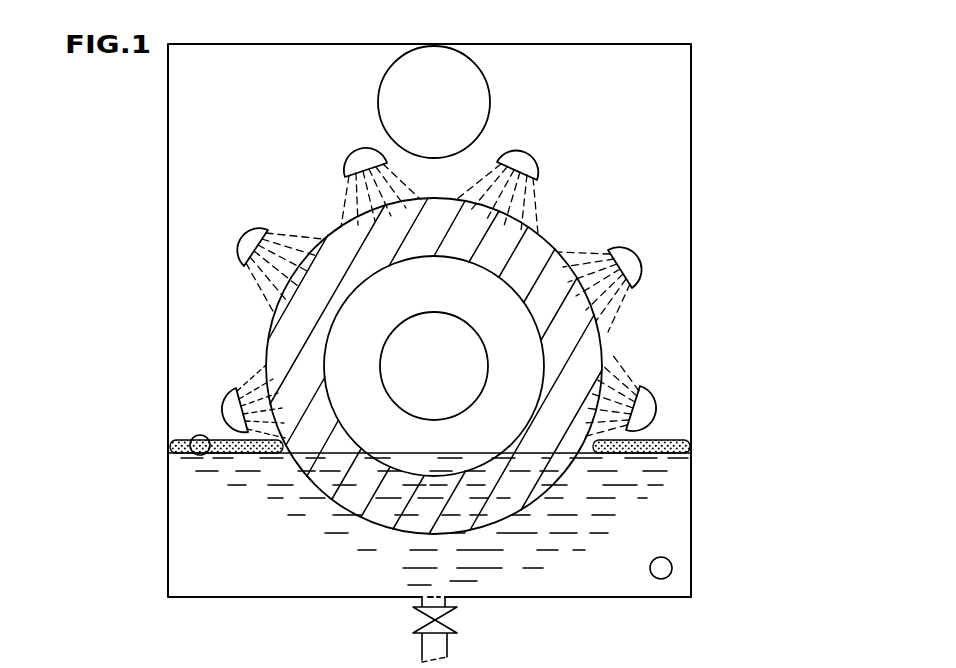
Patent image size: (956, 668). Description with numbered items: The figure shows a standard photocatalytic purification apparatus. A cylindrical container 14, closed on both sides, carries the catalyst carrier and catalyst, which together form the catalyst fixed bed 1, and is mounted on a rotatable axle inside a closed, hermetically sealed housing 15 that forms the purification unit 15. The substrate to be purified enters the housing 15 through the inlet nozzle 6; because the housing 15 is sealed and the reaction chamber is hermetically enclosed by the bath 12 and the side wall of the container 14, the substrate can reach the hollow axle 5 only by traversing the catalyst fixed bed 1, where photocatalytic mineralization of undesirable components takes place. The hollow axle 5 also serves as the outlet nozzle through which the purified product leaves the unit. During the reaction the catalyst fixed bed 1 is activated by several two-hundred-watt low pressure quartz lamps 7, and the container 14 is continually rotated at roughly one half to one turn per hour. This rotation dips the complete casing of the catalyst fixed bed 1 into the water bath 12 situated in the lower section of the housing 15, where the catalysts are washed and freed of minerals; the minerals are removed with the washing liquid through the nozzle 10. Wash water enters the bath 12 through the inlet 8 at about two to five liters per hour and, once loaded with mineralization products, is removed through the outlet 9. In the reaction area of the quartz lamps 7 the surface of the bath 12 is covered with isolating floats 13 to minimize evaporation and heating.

The catalyst fixed bed 1 is at (481, 238).
The hollow axle 5 is at (424, 372).
The inlet nozzle 6 is at (425, 103).
The low pressure quartz lamps 7 is at (346, 166).
The inlet 8 is at (198, 436).
The outlet 9 is at (672, 566).
The nozzle 10 is at (421, 601).
The bath 12 is at (662, 533).
The isolating floats 13 is at (180, 452).
The cylindrical container 14 is at (552, 246).
The housing 15 is at (689, 176).